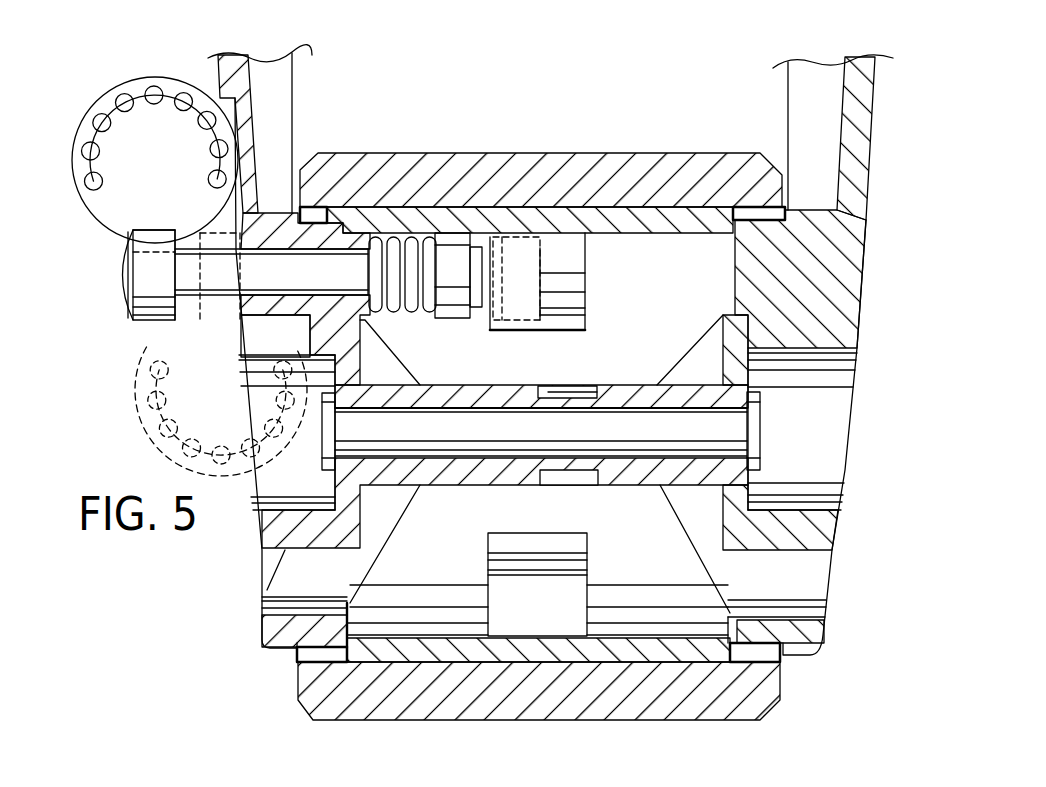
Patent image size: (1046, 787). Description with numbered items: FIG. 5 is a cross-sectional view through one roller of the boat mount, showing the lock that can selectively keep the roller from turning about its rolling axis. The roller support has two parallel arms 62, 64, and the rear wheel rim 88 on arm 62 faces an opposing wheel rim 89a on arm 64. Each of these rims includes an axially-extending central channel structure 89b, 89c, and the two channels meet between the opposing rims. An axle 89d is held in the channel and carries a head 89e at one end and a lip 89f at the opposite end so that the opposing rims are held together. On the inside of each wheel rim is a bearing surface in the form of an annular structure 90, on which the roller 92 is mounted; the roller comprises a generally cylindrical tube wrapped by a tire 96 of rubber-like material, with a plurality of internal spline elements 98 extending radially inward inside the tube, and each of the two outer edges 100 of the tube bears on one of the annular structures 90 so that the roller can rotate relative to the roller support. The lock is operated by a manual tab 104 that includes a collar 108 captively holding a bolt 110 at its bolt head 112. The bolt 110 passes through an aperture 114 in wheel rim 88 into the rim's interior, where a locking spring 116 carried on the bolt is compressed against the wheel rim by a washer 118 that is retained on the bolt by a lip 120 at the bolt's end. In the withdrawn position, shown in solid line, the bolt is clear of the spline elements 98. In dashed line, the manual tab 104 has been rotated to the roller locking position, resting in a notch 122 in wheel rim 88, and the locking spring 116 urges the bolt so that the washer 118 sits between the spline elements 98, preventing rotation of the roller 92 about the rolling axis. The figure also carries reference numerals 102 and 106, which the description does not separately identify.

The arm 62 is at (873, 133).
The arm 64 is at (218, 72).
The rear wheel rim 88 is at (270, 220).
The opposing wheel rim 89a is at (852, 247).
The central channel structure 89b is at (503, 393).
The central channel structure 89c is at (613, 387).
The axle 89d is at (466, 435).
The head 89e is at (325, 438).
The lip 89f is at (750, 437).
The annular structure 90 is at (318, 222).
The roller 92 is at (660, 210).
The tire 96 is at (613, 162).
The internal spline elements 98 is at (583, 250).
The outer edges 100 is at (757, 647).
The bolt assembly 102 is at (108, 247).
The manual tab 104 is at (127, 195).
The bearing balls 106 is at (98, 117).
The collar 108 is at (153, 312).
The bolt 110 is at (190, 240).
The bolt head 112 is at (123, 273).
The aperture 114 is at (228, 279).
The locking spring 116 is at (410, 232).
The washer 118 is at (450, 232).
The lip 120 is at (478, 250).
The notch 122 is at (310, 330).